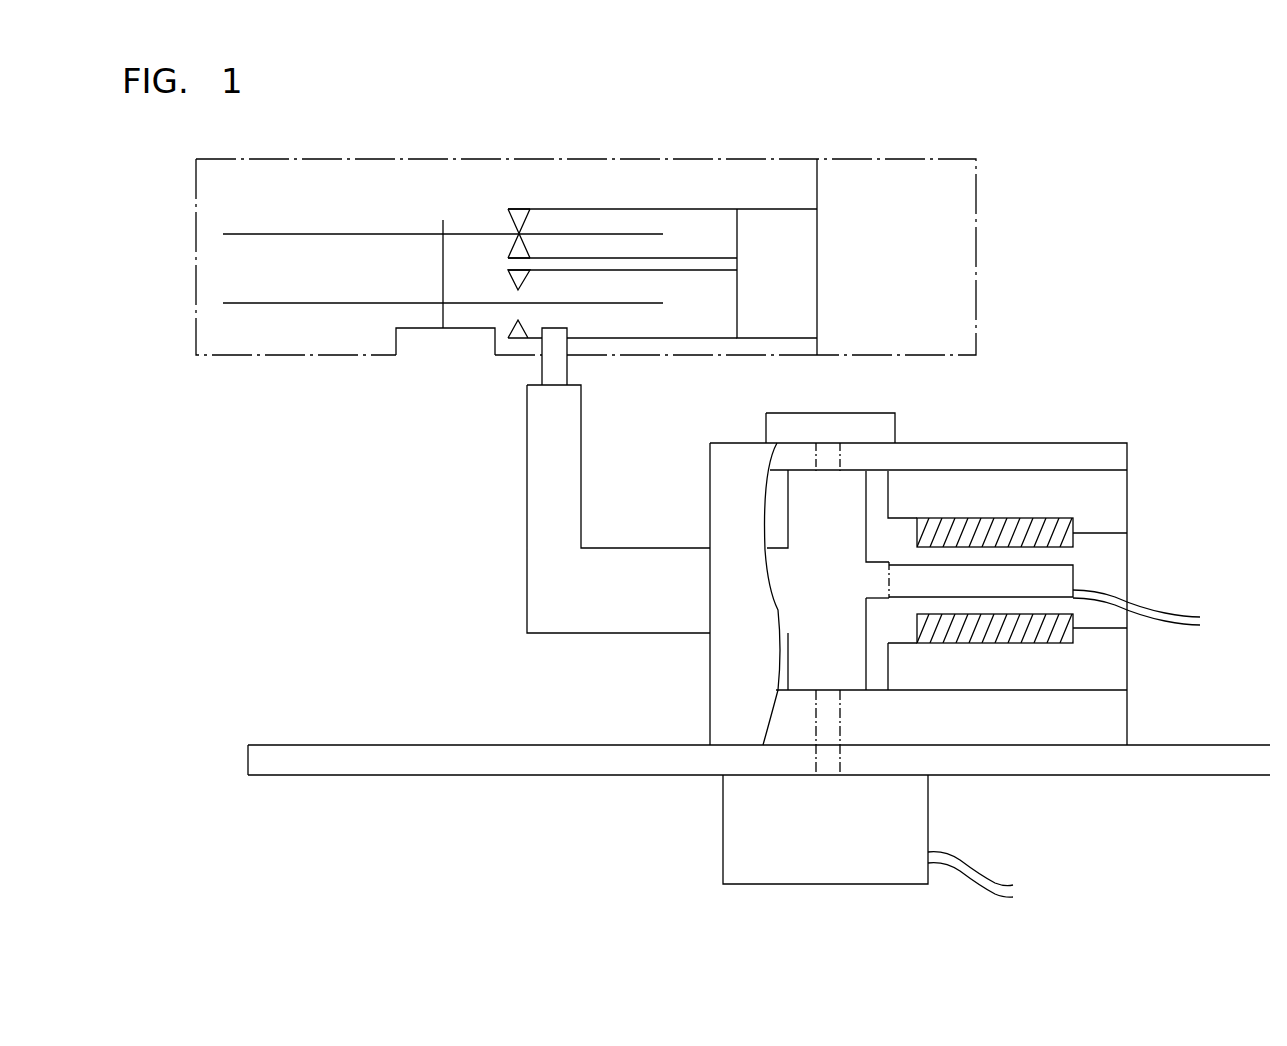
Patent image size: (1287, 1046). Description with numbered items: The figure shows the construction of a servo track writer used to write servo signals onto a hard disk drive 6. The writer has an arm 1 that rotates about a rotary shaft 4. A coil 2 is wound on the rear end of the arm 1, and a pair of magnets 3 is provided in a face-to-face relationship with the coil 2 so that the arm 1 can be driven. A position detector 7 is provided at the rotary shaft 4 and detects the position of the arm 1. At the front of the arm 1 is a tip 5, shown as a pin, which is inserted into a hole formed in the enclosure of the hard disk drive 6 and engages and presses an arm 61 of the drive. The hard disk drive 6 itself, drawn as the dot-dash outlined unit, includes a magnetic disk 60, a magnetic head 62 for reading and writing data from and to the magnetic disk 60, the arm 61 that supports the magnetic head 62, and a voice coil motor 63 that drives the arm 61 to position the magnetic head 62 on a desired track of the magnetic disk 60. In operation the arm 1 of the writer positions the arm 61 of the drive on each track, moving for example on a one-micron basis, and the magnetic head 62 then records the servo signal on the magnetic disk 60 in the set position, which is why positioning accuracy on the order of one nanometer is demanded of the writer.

The arm 1 is at (583, 603).
The coil 2 is at (1065, 578).
The magnets 3 is at (1067, 532).
The rotary shaft 4 is at (833, 443).
The tip 5 is at (542, 365).
The hard disk drive 6 is at (990, 256).
The position detector 7 is at (740, 846).
The magnetic disk 60 is at (258, 234).
The arm 61 is at (650, 340).
The magnetic head 62 is at (514, 342).
The voice coil motor 63 is at (955, 312).